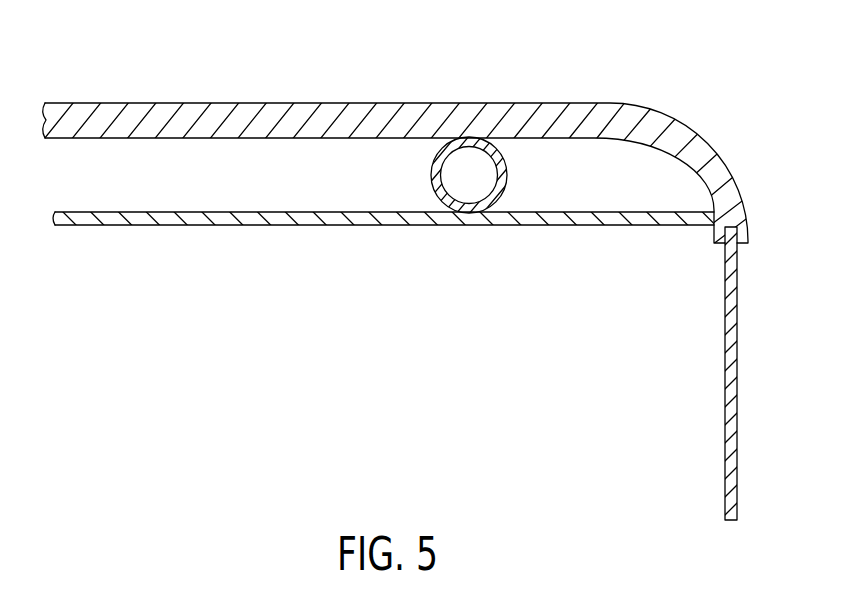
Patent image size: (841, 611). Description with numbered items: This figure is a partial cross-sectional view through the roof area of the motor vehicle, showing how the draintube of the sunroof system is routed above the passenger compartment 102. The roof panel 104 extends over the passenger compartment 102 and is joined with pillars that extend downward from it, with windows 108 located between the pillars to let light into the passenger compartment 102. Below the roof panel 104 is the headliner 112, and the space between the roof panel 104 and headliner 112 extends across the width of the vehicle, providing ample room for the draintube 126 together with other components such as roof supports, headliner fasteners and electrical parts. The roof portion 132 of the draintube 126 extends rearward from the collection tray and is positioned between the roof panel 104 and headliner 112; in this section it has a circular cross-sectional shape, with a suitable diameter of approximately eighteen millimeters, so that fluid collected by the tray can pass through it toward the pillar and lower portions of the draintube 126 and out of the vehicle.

The passenger compartment 102 is at (415, 358).
The roof panel 104 is at (173, 103).
The window 108 is at (726, 310).
The headliner 112 is at (250, 227).
The draintube 126 is at (507, 173).
The roof portion 132 is at (432, 174).